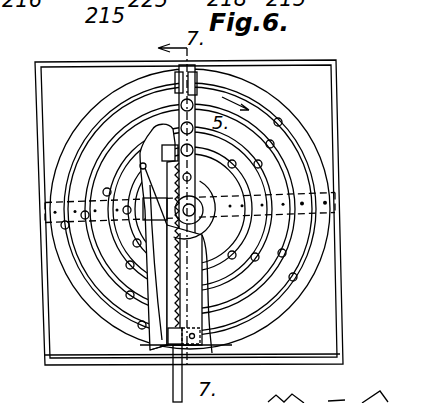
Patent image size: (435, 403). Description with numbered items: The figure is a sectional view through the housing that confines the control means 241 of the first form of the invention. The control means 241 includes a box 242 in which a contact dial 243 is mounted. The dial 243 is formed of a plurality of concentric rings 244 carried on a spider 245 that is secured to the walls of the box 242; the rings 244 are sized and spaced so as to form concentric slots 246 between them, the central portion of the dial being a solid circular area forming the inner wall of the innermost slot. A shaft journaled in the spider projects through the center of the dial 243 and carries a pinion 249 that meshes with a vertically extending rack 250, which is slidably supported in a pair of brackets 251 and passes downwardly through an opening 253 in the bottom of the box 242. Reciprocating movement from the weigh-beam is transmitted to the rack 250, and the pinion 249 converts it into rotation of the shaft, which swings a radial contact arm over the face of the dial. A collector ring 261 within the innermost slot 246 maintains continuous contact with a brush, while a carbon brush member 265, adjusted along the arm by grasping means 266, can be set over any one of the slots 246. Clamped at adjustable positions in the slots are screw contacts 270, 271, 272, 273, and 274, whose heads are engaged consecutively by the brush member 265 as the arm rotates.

The control means 241 is at (434, 210).
The box 242 is at (47, 63).
The contact dial 243 is at (317, 110).
The concentric rings 244 is at (273, 173).
The spider 245 is at (303, 193).
The concentric slots 246 is at (283, 235).
The pinion 249 is at (143, 163).
The rack 250 is at (165, 256).
The brackets 251 is at (165, 345).
The opening 253 is at (170, 371).
The collector ring 261 is at (202, 227).
The brush member 265 is at (183, 72).
The grasping means 266 is at (198, 84).
The contact 270 is at (158, 48).
The contact 271 is at (280, 119).
The contact 272 is at (298, 276).
The contact 273 is at (168, 333).
The contact 274 is at (62, 227).